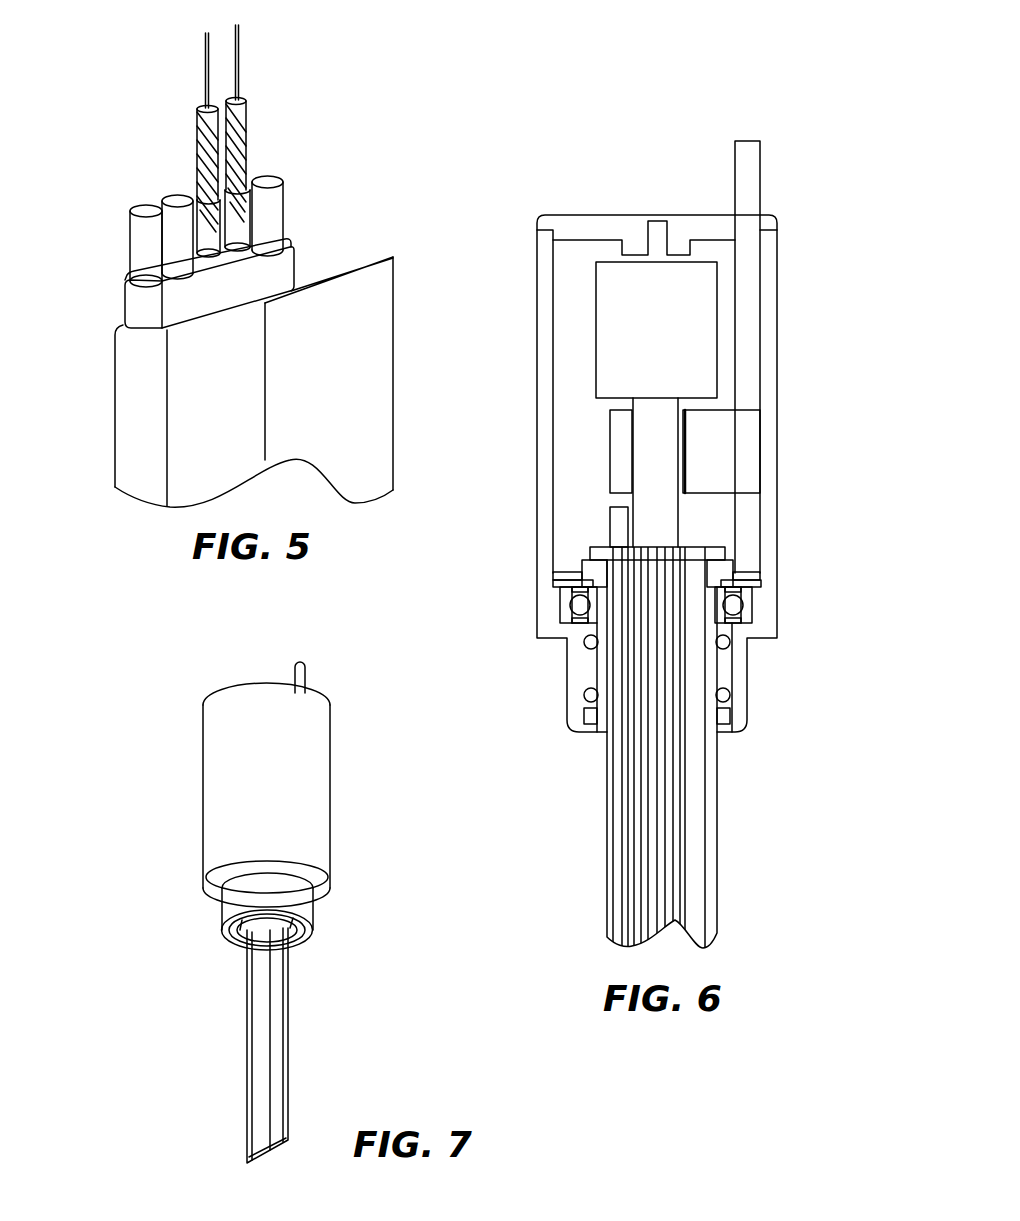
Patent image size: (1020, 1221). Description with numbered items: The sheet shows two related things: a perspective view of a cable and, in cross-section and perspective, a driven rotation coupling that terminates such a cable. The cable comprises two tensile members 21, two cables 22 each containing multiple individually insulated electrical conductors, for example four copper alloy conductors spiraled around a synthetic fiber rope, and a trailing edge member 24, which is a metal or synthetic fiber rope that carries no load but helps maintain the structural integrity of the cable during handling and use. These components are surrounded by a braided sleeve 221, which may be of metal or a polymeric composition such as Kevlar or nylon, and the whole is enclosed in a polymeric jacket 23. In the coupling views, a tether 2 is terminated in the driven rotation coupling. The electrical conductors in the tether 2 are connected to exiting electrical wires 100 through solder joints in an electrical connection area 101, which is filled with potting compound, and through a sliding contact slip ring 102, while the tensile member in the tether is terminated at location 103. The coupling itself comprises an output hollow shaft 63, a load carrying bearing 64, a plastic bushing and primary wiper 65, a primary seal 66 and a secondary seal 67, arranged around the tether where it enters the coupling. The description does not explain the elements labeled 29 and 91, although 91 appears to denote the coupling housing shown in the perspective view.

In FIG. 6, the tether 2 is at (607, 830).
In FIG. 7, the tether 2 is at (240, 1156).
In FIG. 5, the tensile members 21 is at (140, 200).
In FIG. 5, the cables 22 is at (240, 57).
In FIG. 5, the polymeric jacket 23 is at (395, 330).
In FIG. 5, the trailing edge member 24 is at (285, 195).
In FIG. 5, the braided sleeve 221 is at (125, 280).
In FIG. 6, the weight block 29 is at (685, 303).
In FIG. 6, the output hollow shaft 63 is at (580, 565).
In FIG. 6, the load carrying bearing 64 is at (560, 602).
In FIG. 6, the plastic bushing and primary wiper 65 is at (733, 718).
In FIG. 6, the primary seal 66 is at (732, 690).
In FIG. 6, the secondary seal 67 is at (732, 636).
In FIG. 6, the housing 91 is at (777, 383).
In FIG. 7, the housing 91 is at (246, 713).
In FIG. 6, the exiting electrical wires 100 is at (760, 160).
In FIG. 6, the electrical connection area 101 is at (653, 663).
In FIG. 6, the sliding contact slip ring 102 is at (688, 452).
In FIG. 6, the termination location 103 is at (615, 513).